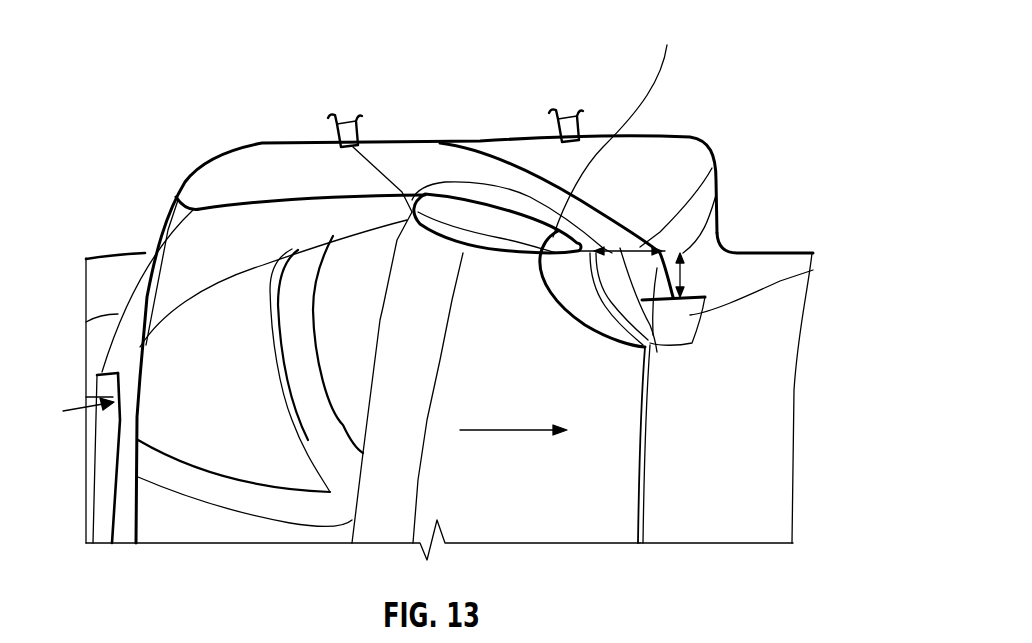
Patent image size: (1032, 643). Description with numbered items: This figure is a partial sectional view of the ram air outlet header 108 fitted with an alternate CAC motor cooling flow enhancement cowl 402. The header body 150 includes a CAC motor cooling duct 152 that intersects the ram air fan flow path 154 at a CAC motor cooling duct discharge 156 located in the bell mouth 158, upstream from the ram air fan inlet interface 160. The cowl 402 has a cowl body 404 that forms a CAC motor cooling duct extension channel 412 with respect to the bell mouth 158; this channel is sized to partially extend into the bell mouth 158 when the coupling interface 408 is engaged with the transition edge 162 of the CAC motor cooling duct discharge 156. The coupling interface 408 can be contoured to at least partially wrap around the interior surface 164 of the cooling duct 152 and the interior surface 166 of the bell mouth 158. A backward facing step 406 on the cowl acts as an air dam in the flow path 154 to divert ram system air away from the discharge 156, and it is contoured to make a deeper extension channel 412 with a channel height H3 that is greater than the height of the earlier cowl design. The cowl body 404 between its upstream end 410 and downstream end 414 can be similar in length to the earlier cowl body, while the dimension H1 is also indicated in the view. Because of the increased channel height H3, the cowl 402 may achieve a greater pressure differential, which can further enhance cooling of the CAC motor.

The ram air outlet header 108 is at (173, 167).
The header body 150 is at (265, 160).
The CAC motor cooling duct 152 is at (433, 170).
The ram air fan flow path 154 is at (512, 431).
The CAC motor cooling duct discharge 156 is at (718, 172).
The bell mouth 158 is at (742, 447).
The ram air fan inlet interface 160 is at (812, 260).
The transition edge 162 is at (621, 125).
The interior surface of the CAC motor cooling duct 164 is at (528, 212).
The interior surface of the bell mouth 166 is at (480, 260).
The CAC motor cooling flow enhancement cowl 402 is at (811, 275).
The cowl body 404 is at (694, 350).
The backward facing step 406 is at (652, 360).
The coupling interface 408 is at (584, 310).
The upstream end 410 is at (585, 267).
The CAC motor cooling duct extension channel 412 is at (743, 261).
The downstream end 414 is at (680, 333).
The horizontal dimension H1 is at (603, 250).
The channel height H3 is at (686, 268).